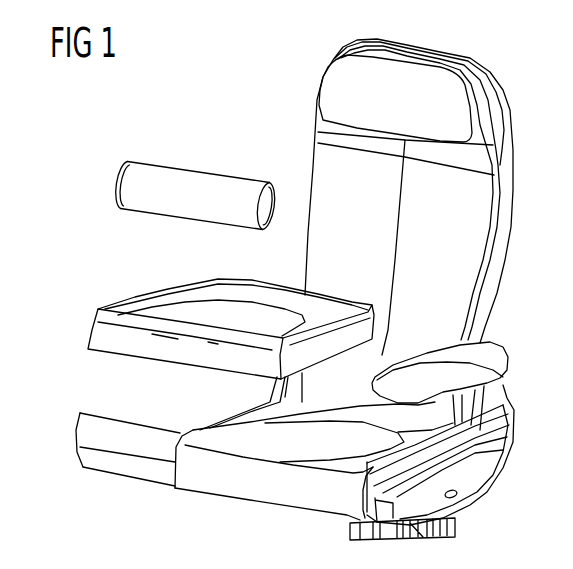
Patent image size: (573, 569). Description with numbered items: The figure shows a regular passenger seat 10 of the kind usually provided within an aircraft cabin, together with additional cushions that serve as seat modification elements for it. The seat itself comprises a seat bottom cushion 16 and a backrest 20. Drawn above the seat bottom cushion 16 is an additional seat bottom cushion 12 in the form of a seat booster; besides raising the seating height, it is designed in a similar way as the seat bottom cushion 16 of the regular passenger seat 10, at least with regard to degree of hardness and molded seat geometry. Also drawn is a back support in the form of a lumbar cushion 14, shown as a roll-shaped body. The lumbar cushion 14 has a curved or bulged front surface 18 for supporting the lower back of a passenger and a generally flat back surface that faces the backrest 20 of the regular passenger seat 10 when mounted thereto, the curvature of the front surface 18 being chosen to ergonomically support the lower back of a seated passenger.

The regular passenger seat 10 is at (262, 138).
The seat bottom cushion 12 is at (119, 293).
The lumbar cushion 14 is at (108, 179).
The seat bottom cushion 16 is at (269, 425).
The front surface 18 is at (163, 178).
The backrest 20 is at (324, 265).